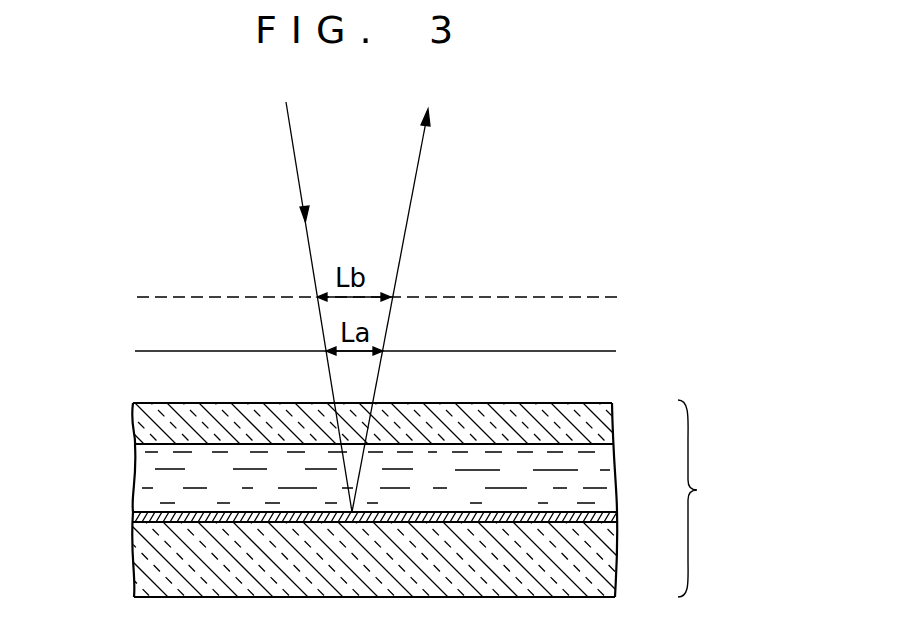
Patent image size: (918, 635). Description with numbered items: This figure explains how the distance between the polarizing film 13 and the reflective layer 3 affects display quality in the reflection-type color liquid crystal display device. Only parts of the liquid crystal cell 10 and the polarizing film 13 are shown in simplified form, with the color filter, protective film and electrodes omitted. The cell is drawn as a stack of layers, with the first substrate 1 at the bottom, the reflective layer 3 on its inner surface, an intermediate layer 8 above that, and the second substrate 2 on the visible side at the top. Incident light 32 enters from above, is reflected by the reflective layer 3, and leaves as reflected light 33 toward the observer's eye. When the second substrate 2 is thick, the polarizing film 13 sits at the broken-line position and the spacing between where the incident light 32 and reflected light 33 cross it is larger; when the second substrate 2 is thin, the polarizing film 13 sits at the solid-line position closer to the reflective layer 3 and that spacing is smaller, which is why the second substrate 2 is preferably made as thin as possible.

The first substrate 1 is at (608, 566).
The second substrate 2 is at (600, 425).
The reflective layer 3 is at (612, 517).
The intermediate layer 8 is at (603, 477).
The liquid crystal cell 10 is at (707, 498).
The polarizing film 13 is at (591, 296).
The incident light 32 is at (297, 172).
The reflected light 33 is at (412, 190).